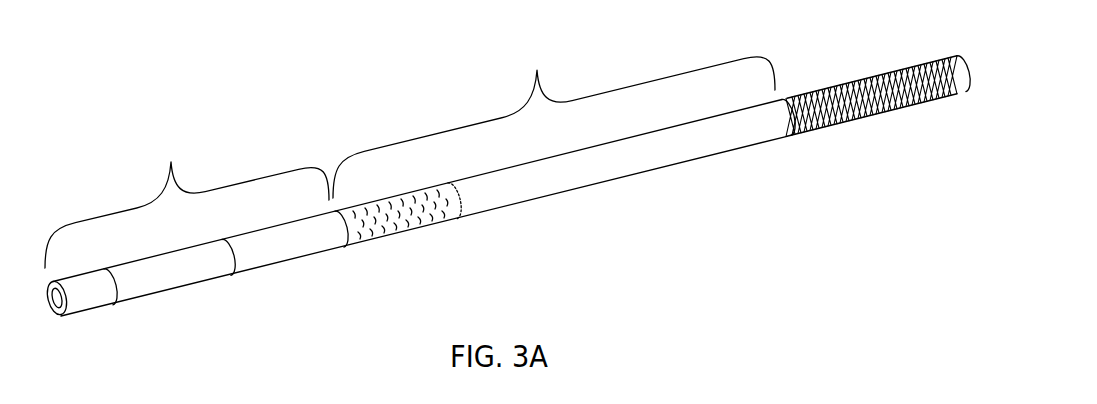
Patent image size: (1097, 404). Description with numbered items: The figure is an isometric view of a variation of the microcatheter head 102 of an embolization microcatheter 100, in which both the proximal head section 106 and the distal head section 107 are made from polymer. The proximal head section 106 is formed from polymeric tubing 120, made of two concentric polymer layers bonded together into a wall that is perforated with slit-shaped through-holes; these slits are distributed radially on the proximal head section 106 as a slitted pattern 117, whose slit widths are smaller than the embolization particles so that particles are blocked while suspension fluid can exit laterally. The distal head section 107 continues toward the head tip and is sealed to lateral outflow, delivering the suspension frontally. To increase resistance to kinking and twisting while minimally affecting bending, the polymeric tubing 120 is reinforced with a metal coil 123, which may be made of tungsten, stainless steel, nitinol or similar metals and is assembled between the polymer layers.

The embolization microcatheter 100 is at (348, 60).
The microcatheter head 102 is at (545, 197).
The proximal head section 106 is at (554, 105).
The distal head section 107 is at (187, 214).
The slitted pattern 117 is at (440, 238).
The polymeric tubing 120 is at (370, 238).
The metal coil 123 is at (817, 128).